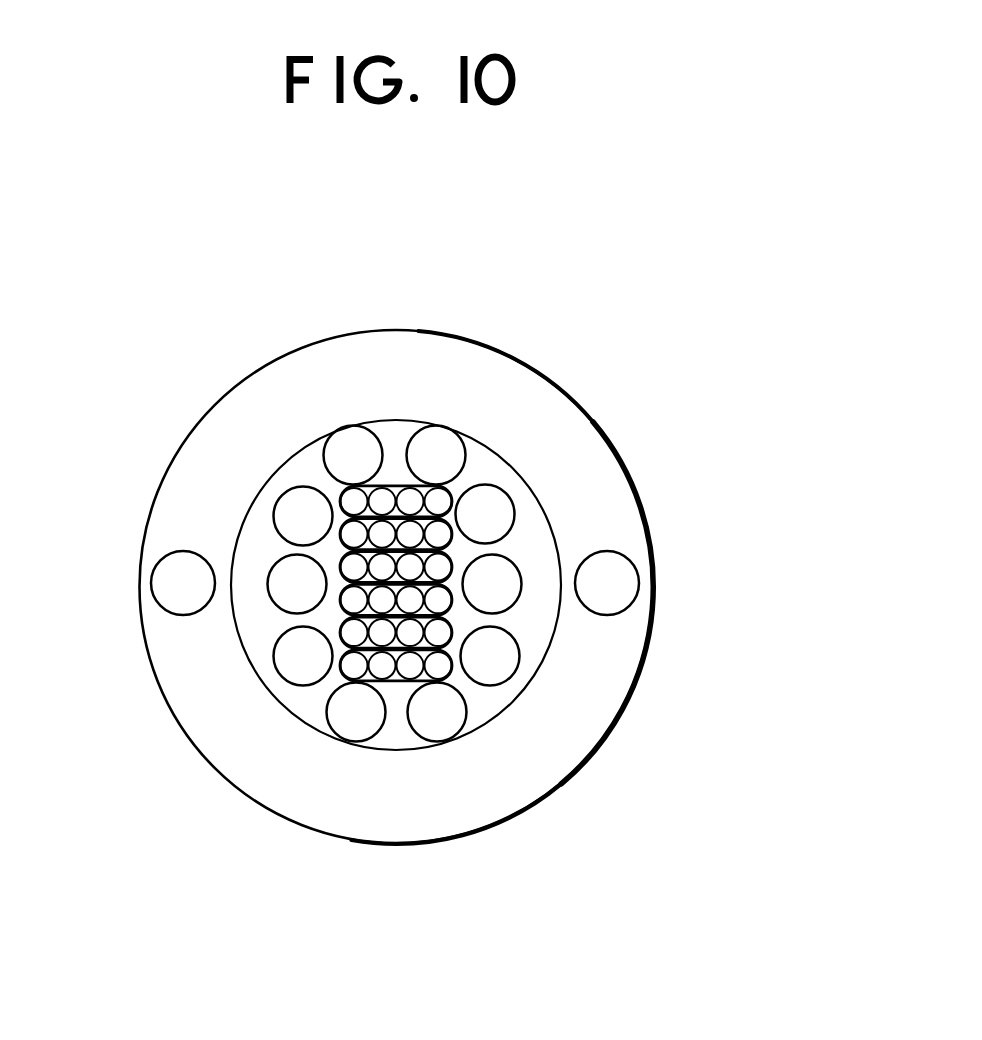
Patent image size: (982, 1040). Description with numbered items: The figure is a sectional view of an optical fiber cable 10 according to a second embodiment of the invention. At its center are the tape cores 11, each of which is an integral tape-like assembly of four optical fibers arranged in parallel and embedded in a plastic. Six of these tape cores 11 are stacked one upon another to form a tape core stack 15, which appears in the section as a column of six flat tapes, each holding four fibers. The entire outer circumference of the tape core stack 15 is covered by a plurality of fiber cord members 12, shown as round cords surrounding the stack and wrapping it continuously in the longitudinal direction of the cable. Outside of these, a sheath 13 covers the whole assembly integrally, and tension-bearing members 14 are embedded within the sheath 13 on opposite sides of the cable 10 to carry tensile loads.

The optical fiber cable 10 is at (866, 289).
The tape core 11 is at (352, 502).
The fiber cord member 12 is at (513, 511).
The sheath 13 is at (622, 708).
The tension-bearing member 14 is at (151, 582).
The tape core stack 15 is at (391, 481).